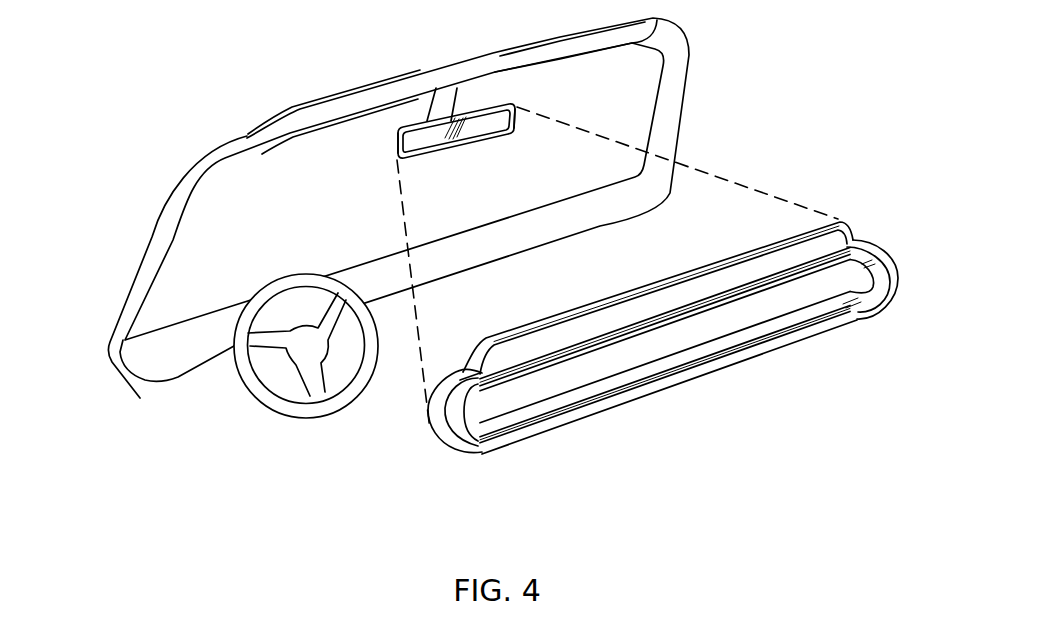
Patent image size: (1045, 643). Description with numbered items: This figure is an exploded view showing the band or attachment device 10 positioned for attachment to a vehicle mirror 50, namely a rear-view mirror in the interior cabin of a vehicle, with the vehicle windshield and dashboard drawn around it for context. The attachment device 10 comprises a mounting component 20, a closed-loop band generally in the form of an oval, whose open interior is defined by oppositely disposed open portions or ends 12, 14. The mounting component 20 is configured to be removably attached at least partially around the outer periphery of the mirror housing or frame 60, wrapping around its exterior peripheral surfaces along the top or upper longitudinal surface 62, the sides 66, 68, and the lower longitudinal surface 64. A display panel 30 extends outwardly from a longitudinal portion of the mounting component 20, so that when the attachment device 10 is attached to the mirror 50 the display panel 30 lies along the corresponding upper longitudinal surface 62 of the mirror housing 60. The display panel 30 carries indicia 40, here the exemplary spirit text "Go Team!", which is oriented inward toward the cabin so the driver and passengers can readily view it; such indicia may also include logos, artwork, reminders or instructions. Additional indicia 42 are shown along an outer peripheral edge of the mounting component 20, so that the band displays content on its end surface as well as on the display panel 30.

The attachment device 10 is at (630, 306).
The open end 12 is at (857, 321).
The open end 14 is at (781, 337).
The mounting component 20 is at (667, 404).
The display panel 30 is at (527, 325).
The indicia 40 is at (628, 306).
The indicia 42 is at (428, 427).
The vehicle mirror 50 is at (525, 96).
The mirror housing 60 is at (447, 106).
The top longitudinal surface 62 is at (429, 120).
The lower longitudinal surface 64 is at (488, 137).
The side 66 is at (397, 134).
The side 68 is at (513, 105).